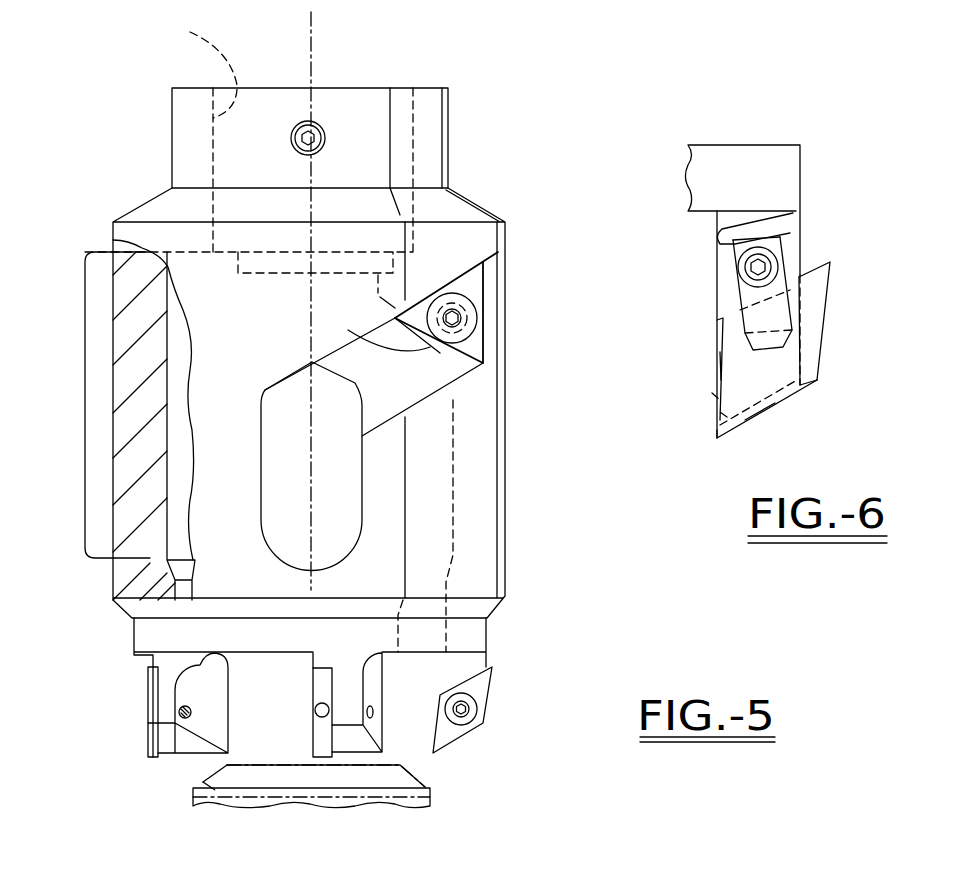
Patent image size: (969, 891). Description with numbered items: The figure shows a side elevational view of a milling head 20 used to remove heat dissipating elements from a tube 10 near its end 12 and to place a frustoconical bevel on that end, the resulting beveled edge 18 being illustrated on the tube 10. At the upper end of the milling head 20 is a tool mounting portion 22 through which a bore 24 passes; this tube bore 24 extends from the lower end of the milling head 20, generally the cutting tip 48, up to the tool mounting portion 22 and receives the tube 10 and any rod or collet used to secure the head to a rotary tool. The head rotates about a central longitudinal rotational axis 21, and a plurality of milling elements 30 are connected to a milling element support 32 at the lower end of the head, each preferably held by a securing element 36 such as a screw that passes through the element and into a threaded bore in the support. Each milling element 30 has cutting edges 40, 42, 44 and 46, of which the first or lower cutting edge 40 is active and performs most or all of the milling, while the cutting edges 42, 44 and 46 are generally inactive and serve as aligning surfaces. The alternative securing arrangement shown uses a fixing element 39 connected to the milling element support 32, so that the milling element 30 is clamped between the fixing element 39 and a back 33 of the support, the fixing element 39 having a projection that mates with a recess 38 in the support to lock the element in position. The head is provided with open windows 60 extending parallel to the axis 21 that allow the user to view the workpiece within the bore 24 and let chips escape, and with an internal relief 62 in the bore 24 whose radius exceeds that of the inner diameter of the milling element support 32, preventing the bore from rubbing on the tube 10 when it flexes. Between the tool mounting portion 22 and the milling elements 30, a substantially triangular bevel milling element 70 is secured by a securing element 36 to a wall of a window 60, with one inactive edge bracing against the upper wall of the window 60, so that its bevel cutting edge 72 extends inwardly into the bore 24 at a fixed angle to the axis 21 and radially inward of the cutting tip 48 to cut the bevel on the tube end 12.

In FIG. 5, the tube 10 is at (432, 792).
In FIG. 5, the end 12 is at (275, 762).
In FIG. 5, the beveled edge 18 is at (213, 780).
In FIG. 5, the milling head 20 is at (448, 90).
In FIG. 5, the central longitudinal rotational axis 21 is at (311, 443).
In FIG. 5, the tool mounting portion 22 is at (450, 130).
In FIG. 5, the bore 24 is at (215, 503).
In FIG. 5, the milling element 30 is at (148, 708).
In FIG. 6, the milling element 30 is at (817, 382).
In FIG. 5, the milling element support 32 is at (480, 632).
In FIG. 6, the milling element support 32 is at (717, 258).
In FIG. 6, the back 33 is at (712, 393).
In FIG. 5, the securing element 36 is at (470, 302).
In FIG. 6, the securing element 36 is at (768, 265).
In FIG. 6, the recess 38 is at (790, 218).
In FIG. 6, the fixing element 39 is at (770, 228).
In FIG. 6, the first cutting edge 40 is at (757, 418).
In FIG. 6, the cutting edge 42 is at (720, 352).
In FIG. 6, the cutting edge 44 is at (728, 318).
In FIG. 6, the cutting edge 46 is at (827, 313).
In FIG. 6, the cutting tip 48 is at (715, 440).
In FIG. 5, the window 60 is at (470, 372).
In FIG. 5, the internal relief 62 is at (86, 408).
In FIG. 5, the bevel milling element 70 is at (483, 336).
In FIG. 5, the bevel cutting edge 72 is at (440, 353).